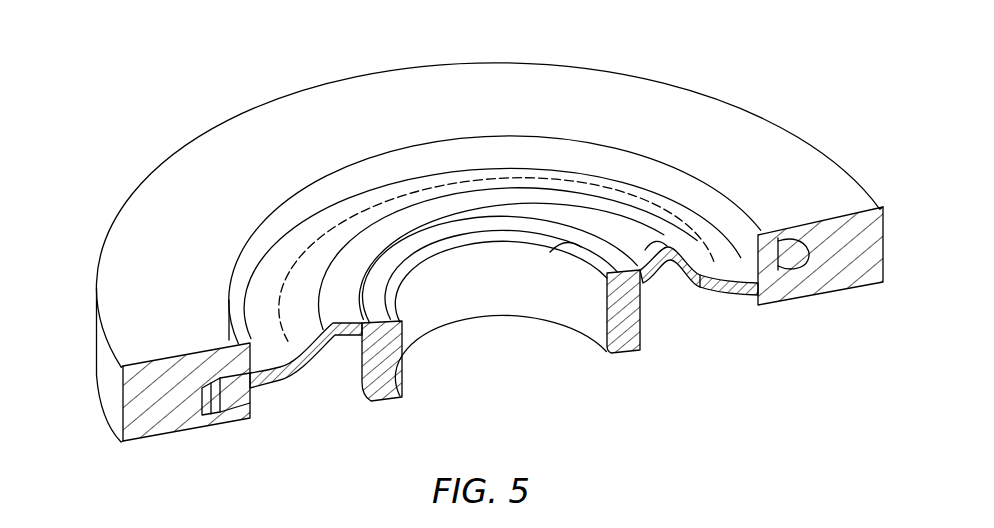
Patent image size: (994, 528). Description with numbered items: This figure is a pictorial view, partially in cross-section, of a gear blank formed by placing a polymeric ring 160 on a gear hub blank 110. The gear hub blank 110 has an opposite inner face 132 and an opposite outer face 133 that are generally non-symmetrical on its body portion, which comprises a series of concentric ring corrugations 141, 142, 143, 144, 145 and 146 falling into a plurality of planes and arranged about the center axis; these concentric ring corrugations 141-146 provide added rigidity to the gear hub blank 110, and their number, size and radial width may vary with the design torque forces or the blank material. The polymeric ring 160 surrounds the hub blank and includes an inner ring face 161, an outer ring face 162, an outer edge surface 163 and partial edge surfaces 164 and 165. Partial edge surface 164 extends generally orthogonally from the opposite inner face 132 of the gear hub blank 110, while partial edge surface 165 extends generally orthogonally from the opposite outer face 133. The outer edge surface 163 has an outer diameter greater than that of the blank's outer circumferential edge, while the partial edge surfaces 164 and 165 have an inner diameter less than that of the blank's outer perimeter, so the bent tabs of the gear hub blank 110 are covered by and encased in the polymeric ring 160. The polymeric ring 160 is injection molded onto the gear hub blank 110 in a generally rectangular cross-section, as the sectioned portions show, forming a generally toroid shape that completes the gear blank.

The gear hub blank 110 is at (385, 227).
The opposite inner face 132 is at (330, 352).
The opposite outer face 133 is at (318, 304).
The concentric ring corrugation 141 is at (605, 258).
The concentric ring corrugation 142 is at (583, 243).
The concentric ring corrugation 143 is at (668, 238).
The concentric ring corrugation 144 is at (662, 227).
The concentric ring corrugation 145 is at (711, 250).
The concentric ring corrugation 146 is at (800, 256).
The polymeric ring 160 is at (673, 99).
The inner ring face 161 is at (778, 306).
The outer ring face 162 is at (203, 178).
The outer edge surface 163 is at (107, 376).
The partial edge surface 164 is at (248, 404).
The partial edge surface 165 is at (520, 153).